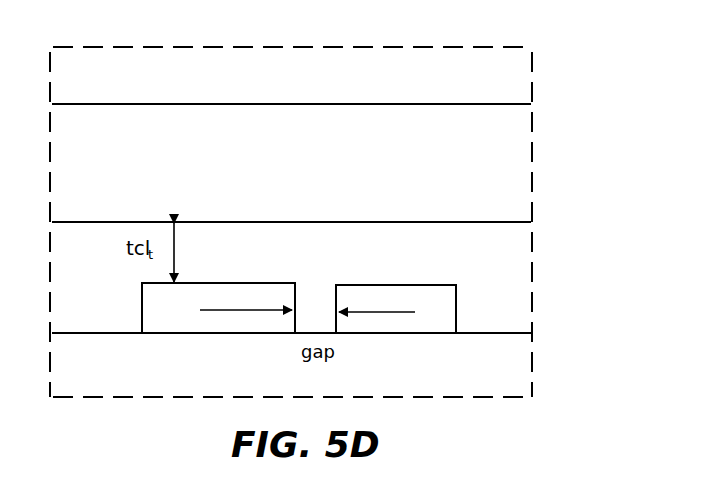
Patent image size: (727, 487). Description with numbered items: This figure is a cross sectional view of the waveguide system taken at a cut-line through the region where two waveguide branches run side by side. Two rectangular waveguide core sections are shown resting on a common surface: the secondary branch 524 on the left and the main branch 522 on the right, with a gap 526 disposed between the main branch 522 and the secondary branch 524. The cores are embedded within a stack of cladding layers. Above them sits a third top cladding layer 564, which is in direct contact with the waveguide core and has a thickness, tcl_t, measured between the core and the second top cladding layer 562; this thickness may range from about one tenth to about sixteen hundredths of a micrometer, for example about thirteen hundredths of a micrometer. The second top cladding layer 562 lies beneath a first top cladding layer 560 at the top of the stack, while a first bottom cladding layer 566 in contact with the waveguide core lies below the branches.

The first top cladding layer 560 is at (515, 83).
The second top cladding layer 562 is at (514, 172).
The third top cladding layer 564 is at (517, 285).
The first bottom cladding layer 566 is at (514, 380).
The secondary branch 524 is at (152, 312).
The main branch 522 is at (372, 300).
The gap 526 is at (313, 291).